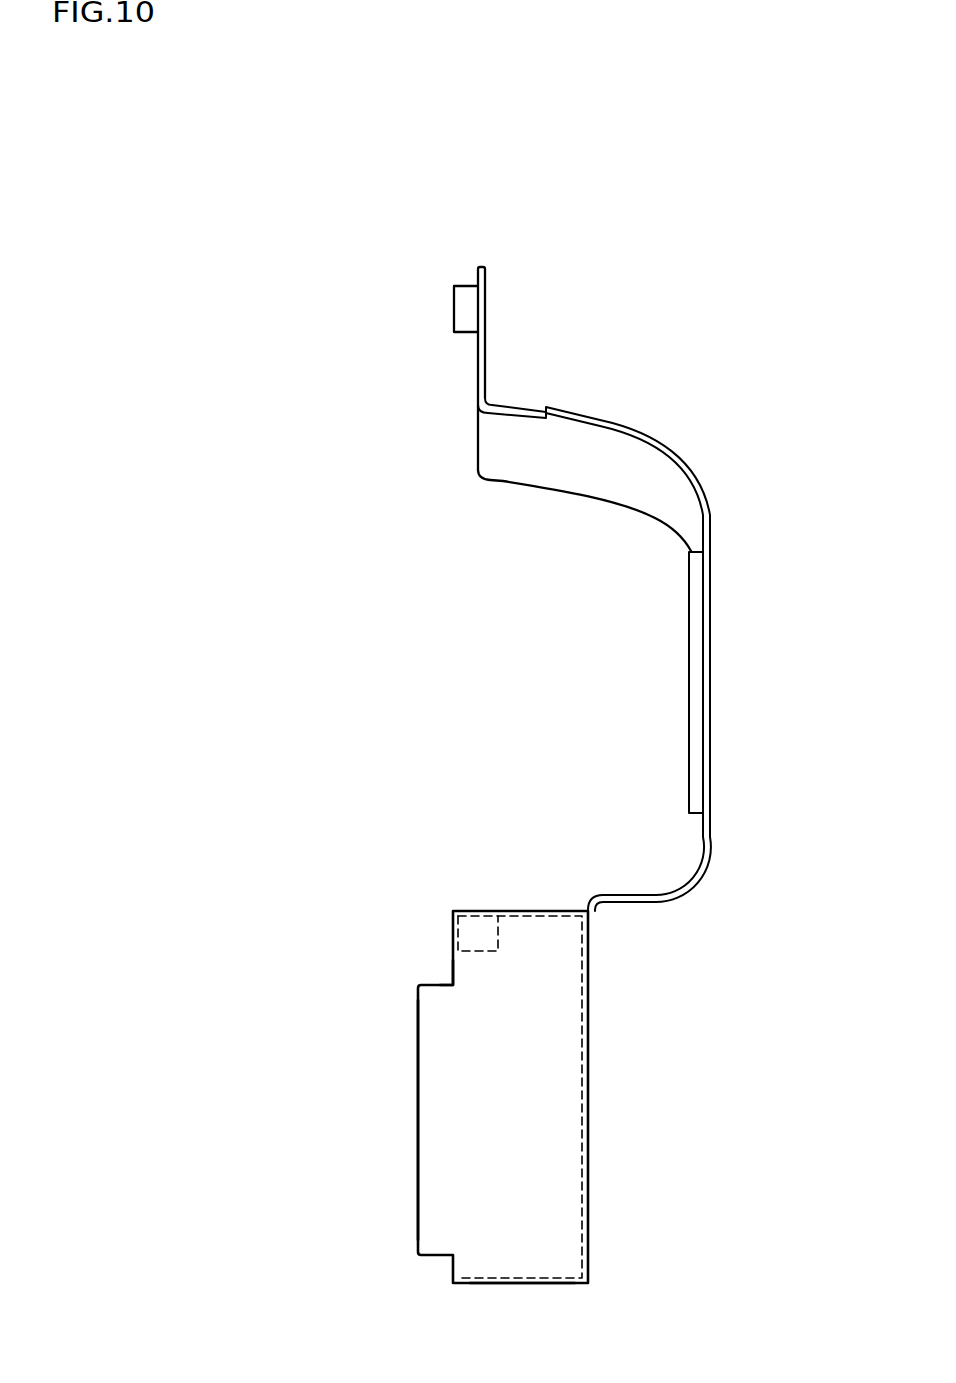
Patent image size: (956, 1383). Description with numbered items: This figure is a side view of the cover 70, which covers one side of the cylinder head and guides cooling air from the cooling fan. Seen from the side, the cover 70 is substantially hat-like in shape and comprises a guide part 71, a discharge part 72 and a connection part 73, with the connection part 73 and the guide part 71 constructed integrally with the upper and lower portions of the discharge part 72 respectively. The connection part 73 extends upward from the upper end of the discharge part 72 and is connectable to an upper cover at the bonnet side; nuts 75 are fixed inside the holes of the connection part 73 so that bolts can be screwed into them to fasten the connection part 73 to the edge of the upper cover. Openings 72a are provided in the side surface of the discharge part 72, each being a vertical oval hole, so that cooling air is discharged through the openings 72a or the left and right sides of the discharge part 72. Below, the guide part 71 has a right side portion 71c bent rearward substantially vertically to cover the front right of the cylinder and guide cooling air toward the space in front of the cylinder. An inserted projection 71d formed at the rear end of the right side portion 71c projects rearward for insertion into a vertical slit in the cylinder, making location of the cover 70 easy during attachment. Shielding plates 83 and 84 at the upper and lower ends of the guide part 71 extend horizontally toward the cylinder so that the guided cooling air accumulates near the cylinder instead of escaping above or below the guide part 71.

The cover 70 is at (779, 306).
The guide part 71 is at (590, 1108).
The right side portion 71c is at (453, 970).
The inserted projection 71d is at (418, 1115).
The discharge part 72 is at (710, 537).
The openings 72a is at (689, 718).
The connection part 73 is at (485, 354).
The nuts 75 is at (454, 309).
The upper shielding plate 83 is at (520, 910).
The lower shielding plate 84 is at (522, 1284).